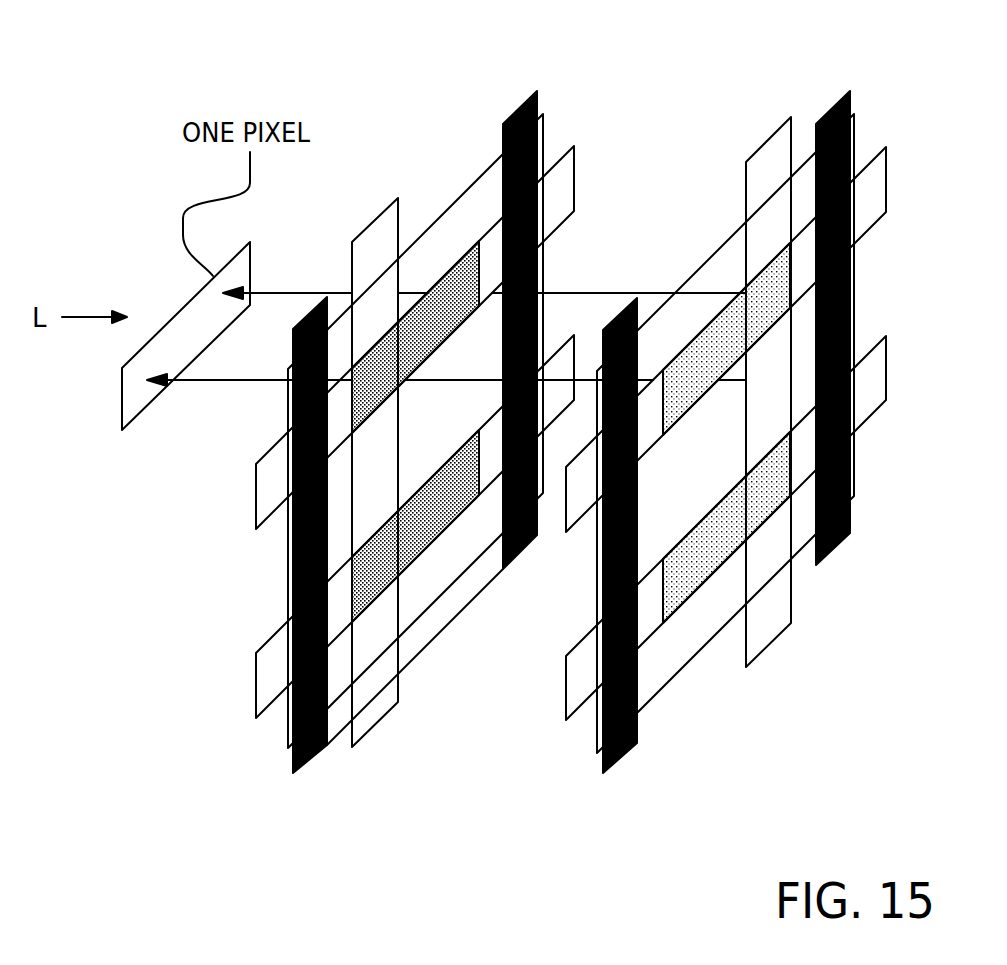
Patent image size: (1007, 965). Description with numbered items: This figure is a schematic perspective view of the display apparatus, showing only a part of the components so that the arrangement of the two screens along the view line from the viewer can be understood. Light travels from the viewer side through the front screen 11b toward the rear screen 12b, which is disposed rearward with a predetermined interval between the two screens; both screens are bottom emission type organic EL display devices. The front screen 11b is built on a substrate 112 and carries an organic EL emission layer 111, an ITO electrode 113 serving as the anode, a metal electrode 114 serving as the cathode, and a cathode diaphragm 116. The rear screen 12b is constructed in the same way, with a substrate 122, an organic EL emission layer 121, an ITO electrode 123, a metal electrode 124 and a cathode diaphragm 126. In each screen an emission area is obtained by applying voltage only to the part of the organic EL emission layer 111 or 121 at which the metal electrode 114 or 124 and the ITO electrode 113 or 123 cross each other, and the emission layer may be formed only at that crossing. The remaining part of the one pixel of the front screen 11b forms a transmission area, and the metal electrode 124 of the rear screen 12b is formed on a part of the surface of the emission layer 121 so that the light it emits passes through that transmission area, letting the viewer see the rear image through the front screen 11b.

The front screen 11b is at (391, 80).
The rear screen 12b is at (707, 80).
The organic EL emission layer 111 is at (431, 348).
The substrate 112 is at (460, 572).
The ITO electrode (anode) 113 is at (256, 503).
The metal electrode (cathode) 114 is at (387, 718).
The cathode diaphragm 116 is at (315, 758).
The organic EL emission layer 121 is at (686, 399).
The substrate 122 is at (713, 638).
The ITO electrode (anode) 123 is at (887, 214).
The metal electrode (cathode) 124 is at (783, 632).
The cathode diaphragm 126 is at (628, 755).